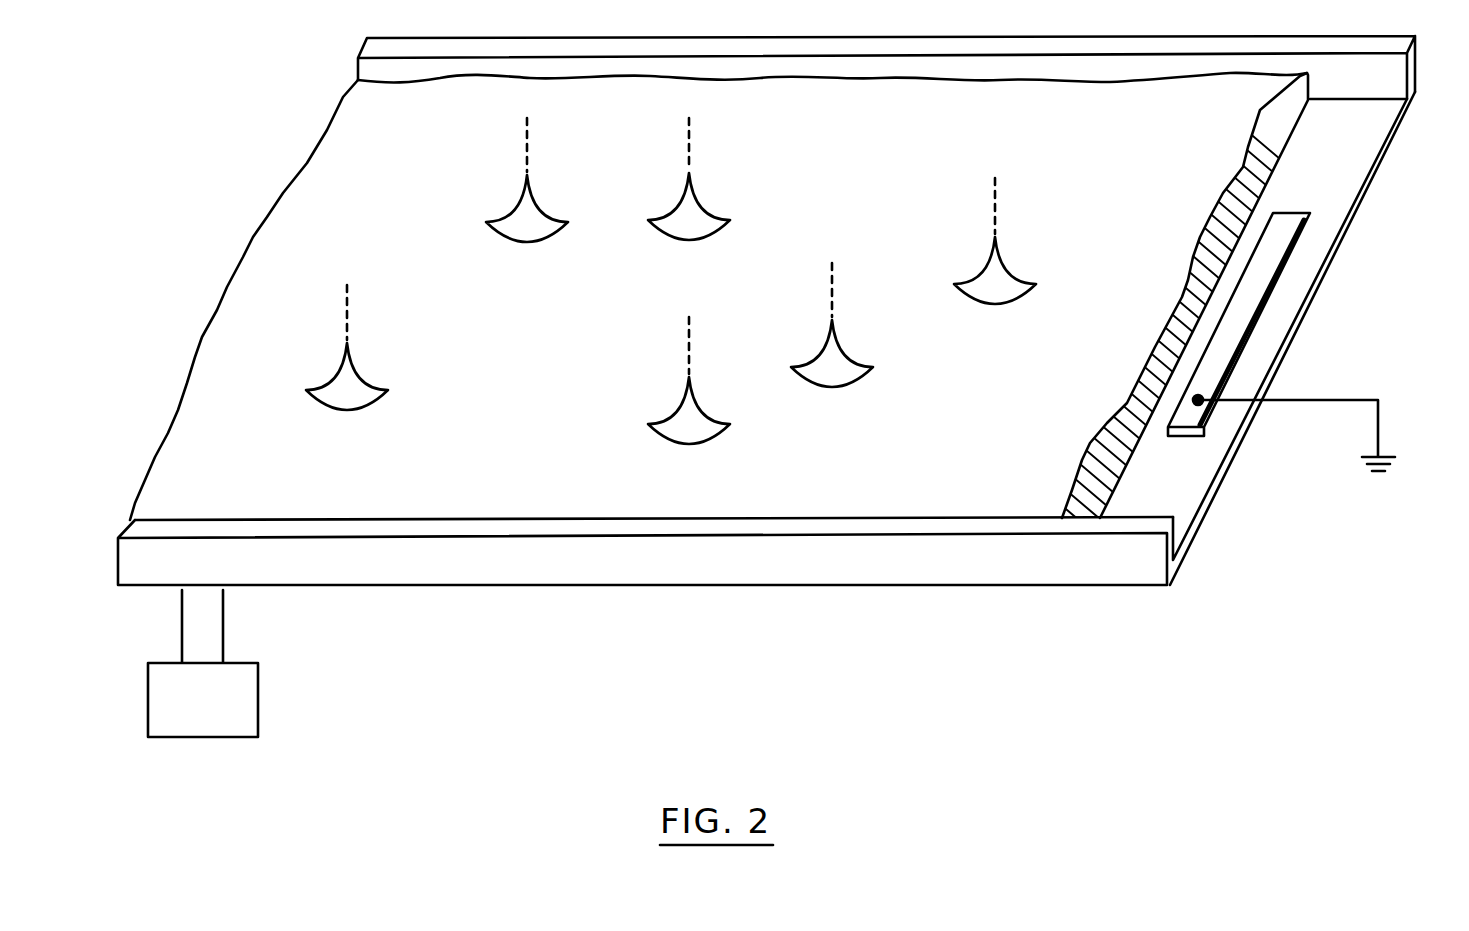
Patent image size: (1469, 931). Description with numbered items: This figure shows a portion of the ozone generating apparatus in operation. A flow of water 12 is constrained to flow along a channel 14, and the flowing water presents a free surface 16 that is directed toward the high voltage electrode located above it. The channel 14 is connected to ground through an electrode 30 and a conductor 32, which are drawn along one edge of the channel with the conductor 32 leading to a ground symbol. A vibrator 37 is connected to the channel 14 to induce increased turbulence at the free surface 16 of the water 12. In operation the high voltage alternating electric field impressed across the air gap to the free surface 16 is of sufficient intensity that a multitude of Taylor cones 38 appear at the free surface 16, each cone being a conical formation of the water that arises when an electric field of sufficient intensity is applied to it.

The flow of water 12 is at (1147, 380).
The channel 14 is at (1072, 565).
The free surface 16 is at (700, 498).
The electrode 30 is at (1237, 323).
The conductor 32 is at (1378, 433).
The vibrator 37 is at (233, 720).
The Taylor cones 38 is at (362, 393).